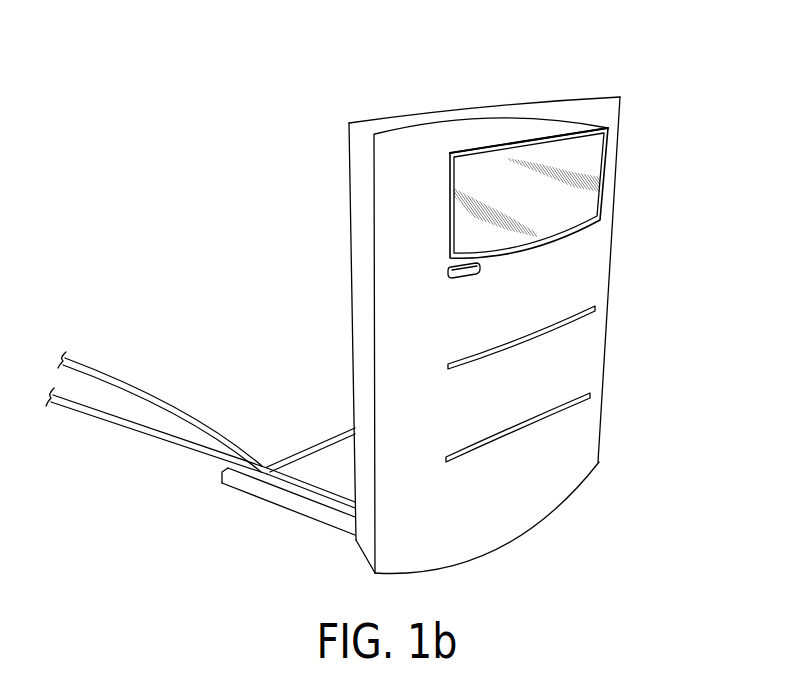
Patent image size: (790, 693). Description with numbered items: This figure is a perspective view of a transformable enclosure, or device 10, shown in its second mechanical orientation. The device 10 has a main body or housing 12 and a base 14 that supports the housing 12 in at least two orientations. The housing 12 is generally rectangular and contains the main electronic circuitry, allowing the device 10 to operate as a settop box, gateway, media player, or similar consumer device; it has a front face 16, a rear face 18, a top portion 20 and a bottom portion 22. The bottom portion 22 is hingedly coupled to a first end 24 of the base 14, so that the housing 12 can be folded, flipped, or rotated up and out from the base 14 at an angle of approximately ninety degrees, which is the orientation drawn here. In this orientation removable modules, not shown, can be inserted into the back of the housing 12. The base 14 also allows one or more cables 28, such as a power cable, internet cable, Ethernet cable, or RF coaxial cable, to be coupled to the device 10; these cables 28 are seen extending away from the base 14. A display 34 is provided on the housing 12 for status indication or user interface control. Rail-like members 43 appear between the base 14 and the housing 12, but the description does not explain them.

The transformable enclosure 10 is at (665, 81).
The housing 12 is at (588, 423).
The base 14 is at (234, 482).
The front face 16 is at (552, 363).
The rear face 18 is at (341, 172).
The top portion 20 is at (581, 103).
The bottom portion 22 is at (467, 550).
The first end 24 is at (346, 529).
The cables 28 is at (141, 431).
The display 34 is at (591, 203).
The guide rails 43 is at (326, 465).